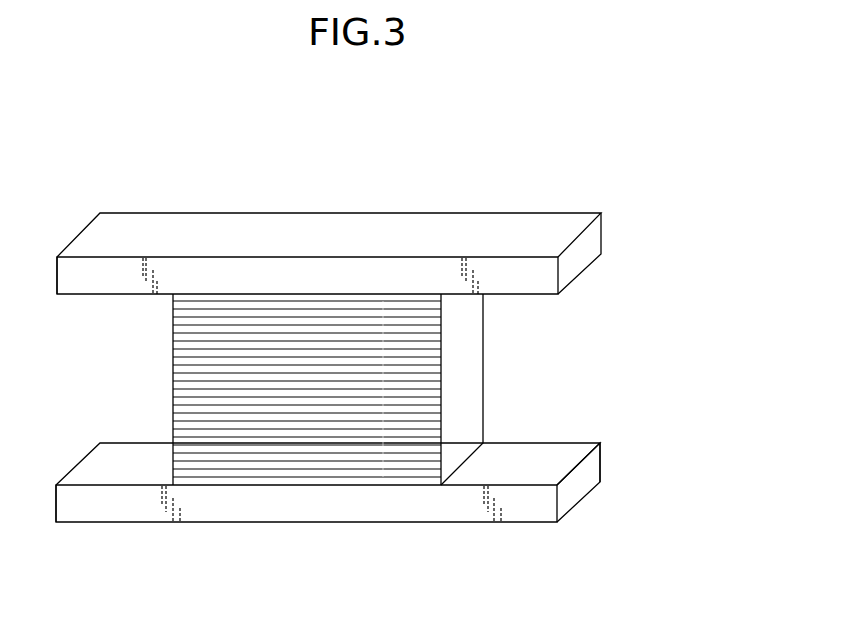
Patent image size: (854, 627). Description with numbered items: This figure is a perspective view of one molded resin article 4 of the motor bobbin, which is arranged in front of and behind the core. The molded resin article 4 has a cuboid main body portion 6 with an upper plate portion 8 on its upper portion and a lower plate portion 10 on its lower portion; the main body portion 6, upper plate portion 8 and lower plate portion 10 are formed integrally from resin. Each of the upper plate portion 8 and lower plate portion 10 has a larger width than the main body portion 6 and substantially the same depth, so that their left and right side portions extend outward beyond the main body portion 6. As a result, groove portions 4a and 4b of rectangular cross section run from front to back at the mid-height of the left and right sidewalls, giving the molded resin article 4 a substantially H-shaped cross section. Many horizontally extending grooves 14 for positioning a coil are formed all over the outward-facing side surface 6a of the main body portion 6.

The molded resin article 4 is at (331, 325).
The groove portion 4a is at (522, 393).
The groove portion 4b is at (135, 392).
The main body portion 6 is at (462, 357).
The side surface 6a is at (388, 408).
The upper plate portion 8 is at (324, 240).
The lower plate portion 10 is at (318, 508).
The grooves 14 is at (248, 458).